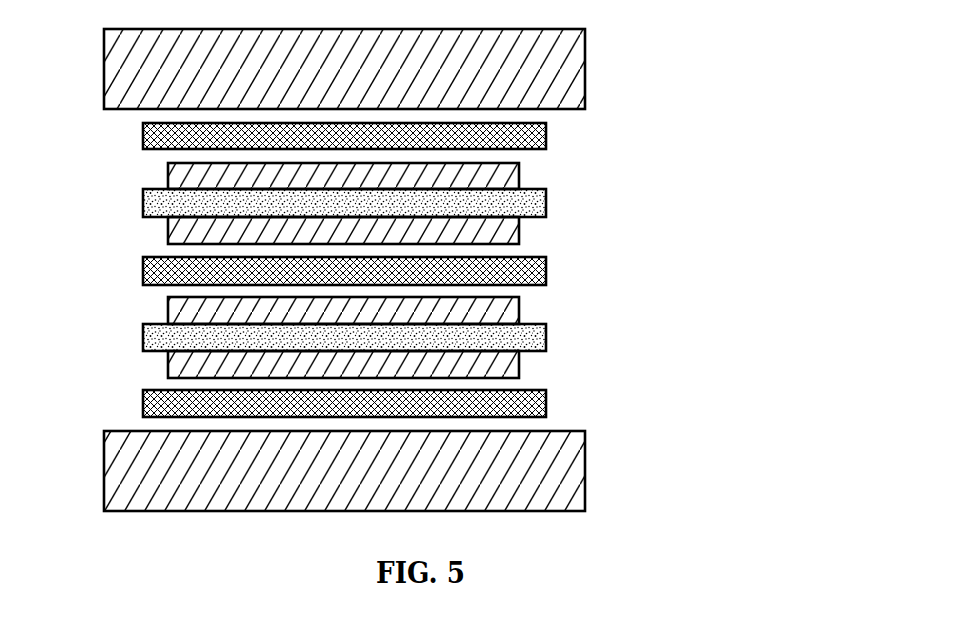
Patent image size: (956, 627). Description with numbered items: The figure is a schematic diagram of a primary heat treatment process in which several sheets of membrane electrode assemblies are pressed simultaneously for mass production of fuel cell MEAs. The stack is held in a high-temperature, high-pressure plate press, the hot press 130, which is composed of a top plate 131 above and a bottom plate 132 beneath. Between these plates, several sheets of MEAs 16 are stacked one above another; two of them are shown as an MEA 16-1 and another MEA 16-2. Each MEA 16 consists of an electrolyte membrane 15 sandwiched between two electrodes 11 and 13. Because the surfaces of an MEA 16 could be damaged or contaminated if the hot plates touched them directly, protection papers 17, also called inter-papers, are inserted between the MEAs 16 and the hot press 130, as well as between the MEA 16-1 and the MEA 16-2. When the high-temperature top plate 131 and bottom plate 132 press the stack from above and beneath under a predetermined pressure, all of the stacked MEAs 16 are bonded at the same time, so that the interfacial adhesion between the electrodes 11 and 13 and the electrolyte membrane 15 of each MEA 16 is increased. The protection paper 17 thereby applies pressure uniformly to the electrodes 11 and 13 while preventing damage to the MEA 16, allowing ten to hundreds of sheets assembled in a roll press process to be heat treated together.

The electrode 11 is at (180, 175).
The electrode 13 is at (180, 232).
The electrolyte membrane 15 is at (143, 203).
The MEA 16 is at (430, 271).
The MEA 16-1 is at (571, 163).
The another MEA 16-2 is at (571, 298).
The protection paper 17 is at (546, 137).
The hot press 130 is at (463, 270).
The top plate 131 is at (575, 70).
The bottom plate 132 is at (577, 468).